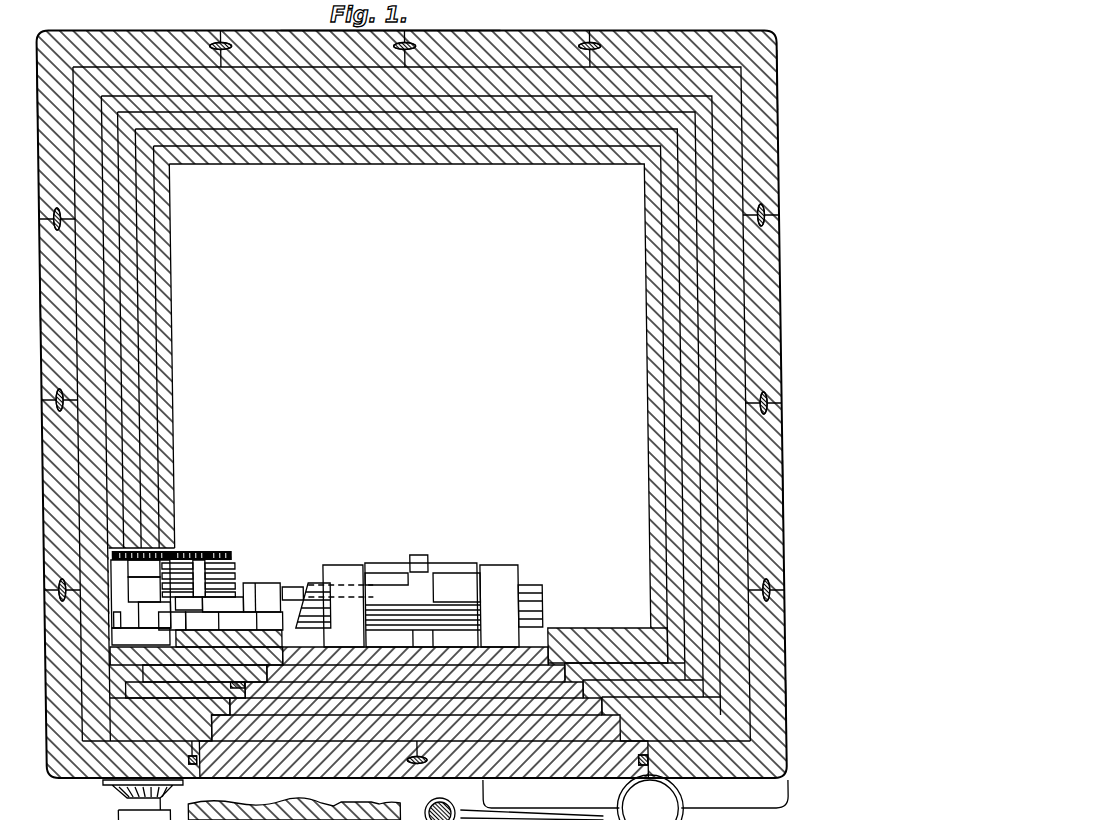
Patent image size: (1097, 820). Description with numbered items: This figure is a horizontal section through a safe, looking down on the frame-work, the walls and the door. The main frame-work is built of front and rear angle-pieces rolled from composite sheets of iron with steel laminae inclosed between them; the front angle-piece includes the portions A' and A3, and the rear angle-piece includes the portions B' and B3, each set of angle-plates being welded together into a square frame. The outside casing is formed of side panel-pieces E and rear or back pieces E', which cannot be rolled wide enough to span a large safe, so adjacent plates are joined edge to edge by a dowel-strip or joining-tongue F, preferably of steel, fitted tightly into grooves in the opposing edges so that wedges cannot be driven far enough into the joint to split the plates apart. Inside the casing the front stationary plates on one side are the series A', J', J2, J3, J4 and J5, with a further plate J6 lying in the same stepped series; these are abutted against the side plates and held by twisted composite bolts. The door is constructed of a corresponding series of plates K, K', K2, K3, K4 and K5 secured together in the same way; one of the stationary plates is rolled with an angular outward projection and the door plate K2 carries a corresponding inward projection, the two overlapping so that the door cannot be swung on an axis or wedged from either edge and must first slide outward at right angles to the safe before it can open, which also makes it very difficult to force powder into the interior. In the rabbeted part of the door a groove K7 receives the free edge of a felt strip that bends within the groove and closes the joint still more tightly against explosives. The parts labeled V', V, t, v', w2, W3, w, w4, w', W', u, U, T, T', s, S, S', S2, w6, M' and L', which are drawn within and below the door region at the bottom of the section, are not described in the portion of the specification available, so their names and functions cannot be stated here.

The front angle-piece portion A3 is at (47, 686).
The front angle-piece portion A' is at (805, 699).
The rear angle-piece portion B3 is at (37, 89).
The rear angle-piece portion B' is at (793, 80).
The side panel-piece E is at (28, 305).
The rear or back piece E' is at (546, 276).
The dowel-strip or joining-tongue F is at (770, 218).
The door plate K is at (423, 712).
The door plate K' is at (416, 729).
The door plate K2 is at (416, 715).
The door plate K3 is at (406, 689).
The door plate K4 is at (416, 672).
The door plate K5 is at (416, 655).
The door groove K7 is at (186, 762).
The front stationary plate J' is at (416, 728).
The front stationary plate J2 is at (415, 705).
The front stationary plate J3 is at (414, 688).
The front stationary plate J4 is at (414, 673).
The front stationary plate J5 is at (389, 647).
The telescoping section foot J6 is at (229, 637).
The rack bar V' is at (171, 541).
The gear plates V is at (195, 561).
The shaft t is at (203, 563).
The gear plates v' is at (234, 567).
The housing block w2 is at (141, 593).
The housing block W3 is at (144, 589).
The pin w is at (116, 612).
The housing block w4 is at (154, 615).
The slide block w' is at (185, 604).
The housing base W' is at (141, 637).
The slide u is at (172, 621).
The slide bar U is at (200, 623).
The bar T is at (222, 605).
The block T' is at (262, 589).
The lens holder s is at (292, 586).
The lens tube S is at (388, 606).
The lens support blocks S' is at (425, 595).
The lens box S2 is at (423, 601).
The foot w6 is at (149, 800).
The base member M' is at (396, 804).
The roller housing L' is at (636, 797).